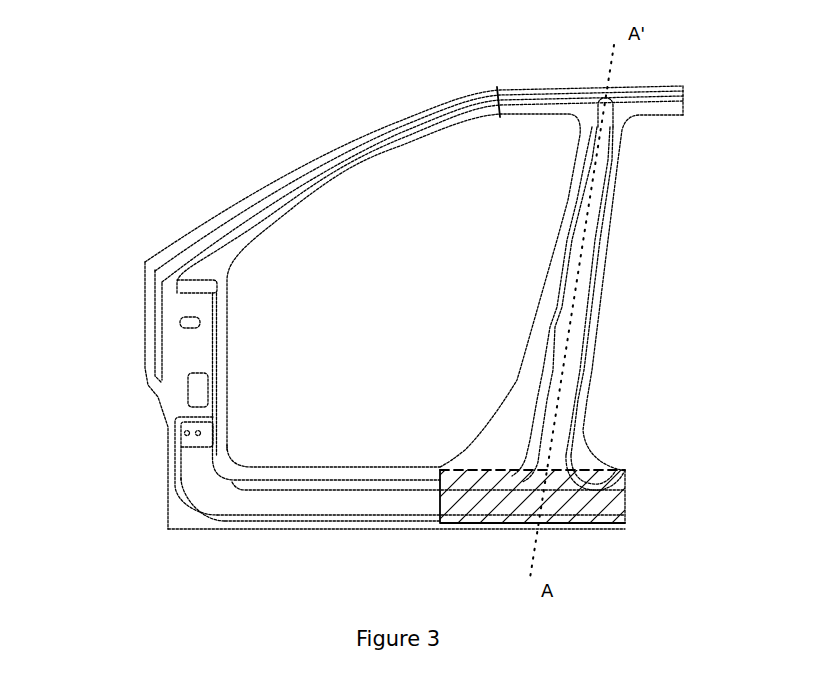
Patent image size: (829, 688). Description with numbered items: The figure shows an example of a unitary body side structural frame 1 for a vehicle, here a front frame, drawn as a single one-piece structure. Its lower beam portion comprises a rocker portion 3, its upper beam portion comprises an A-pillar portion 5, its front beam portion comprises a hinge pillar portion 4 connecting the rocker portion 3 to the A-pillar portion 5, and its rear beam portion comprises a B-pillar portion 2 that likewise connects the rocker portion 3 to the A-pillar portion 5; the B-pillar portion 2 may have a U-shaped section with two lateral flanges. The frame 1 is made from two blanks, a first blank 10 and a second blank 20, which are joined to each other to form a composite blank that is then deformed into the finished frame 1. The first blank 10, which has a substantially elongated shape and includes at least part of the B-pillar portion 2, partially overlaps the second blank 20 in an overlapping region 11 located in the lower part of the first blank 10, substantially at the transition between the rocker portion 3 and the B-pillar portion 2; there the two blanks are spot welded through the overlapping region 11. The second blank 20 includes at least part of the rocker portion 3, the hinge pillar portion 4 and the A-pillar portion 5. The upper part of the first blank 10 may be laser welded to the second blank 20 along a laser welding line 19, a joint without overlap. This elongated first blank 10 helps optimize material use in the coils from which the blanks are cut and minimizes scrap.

The unitary body side structural frame 1 is at (376, 64).
The B-pillar portion 2 is at (675, 236).
The rocker portion 3 is at (364, 545).
The hinge pillar portion 4 is at (115, 394).
The A-pillar portion 5 is at (266, 164).
The first blank 10 is at (597, 307).
The overlapping region 11 is at (568, 480).
The laser welding line 19 is at (500, 96).
The second blank 20 is at (277, 496).